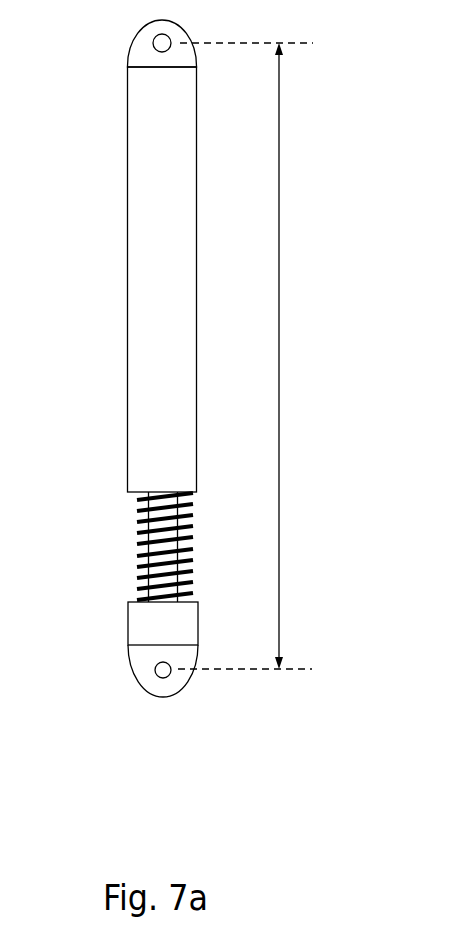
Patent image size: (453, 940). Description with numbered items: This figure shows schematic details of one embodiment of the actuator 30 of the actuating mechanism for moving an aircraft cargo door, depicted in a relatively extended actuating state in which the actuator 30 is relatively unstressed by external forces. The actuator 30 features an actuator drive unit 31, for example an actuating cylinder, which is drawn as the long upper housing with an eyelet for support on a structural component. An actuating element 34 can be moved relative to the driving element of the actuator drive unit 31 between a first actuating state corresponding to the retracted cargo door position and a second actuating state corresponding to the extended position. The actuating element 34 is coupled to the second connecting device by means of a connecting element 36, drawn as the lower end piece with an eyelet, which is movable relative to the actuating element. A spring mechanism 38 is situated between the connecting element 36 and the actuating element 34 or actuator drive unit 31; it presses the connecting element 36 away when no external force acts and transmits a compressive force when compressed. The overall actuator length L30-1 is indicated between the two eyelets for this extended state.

The actuator 30 is at (90, 110).
The actuator drive unit 31 is at (190, 237).
The actuating element 34 is at (150, 535).
The connecting element 36 is at (138, 625).
The spring mechanism 38 is at (203, 517).
The actuator length L30-1 is at (279, 392).